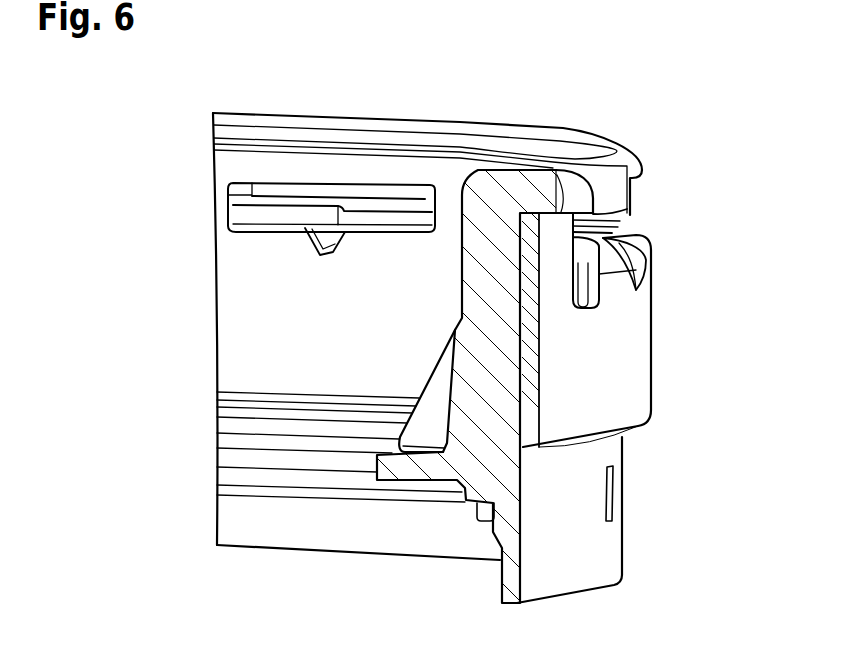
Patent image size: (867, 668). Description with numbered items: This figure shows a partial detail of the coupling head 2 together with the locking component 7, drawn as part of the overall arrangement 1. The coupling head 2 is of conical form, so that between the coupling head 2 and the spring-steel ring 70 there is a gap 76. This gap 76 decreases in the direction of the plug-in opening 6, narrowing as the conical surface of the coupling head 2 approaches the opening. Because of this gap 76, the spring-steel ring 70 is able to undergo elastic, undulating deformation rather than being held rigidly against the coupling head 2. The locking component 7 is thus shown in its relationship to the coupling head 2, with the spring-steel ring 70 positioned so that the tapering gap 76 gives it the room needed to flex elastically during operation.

The assembly 1 is at (679, 114).
The coupling head 2 is at (448, 160).
The plug-in opening 6 is at (318, 110).
The locking component 7 is at (655, 355).
The spring-steel ring 70 is at (590, 425).
The gap 76 is at (519, 452).